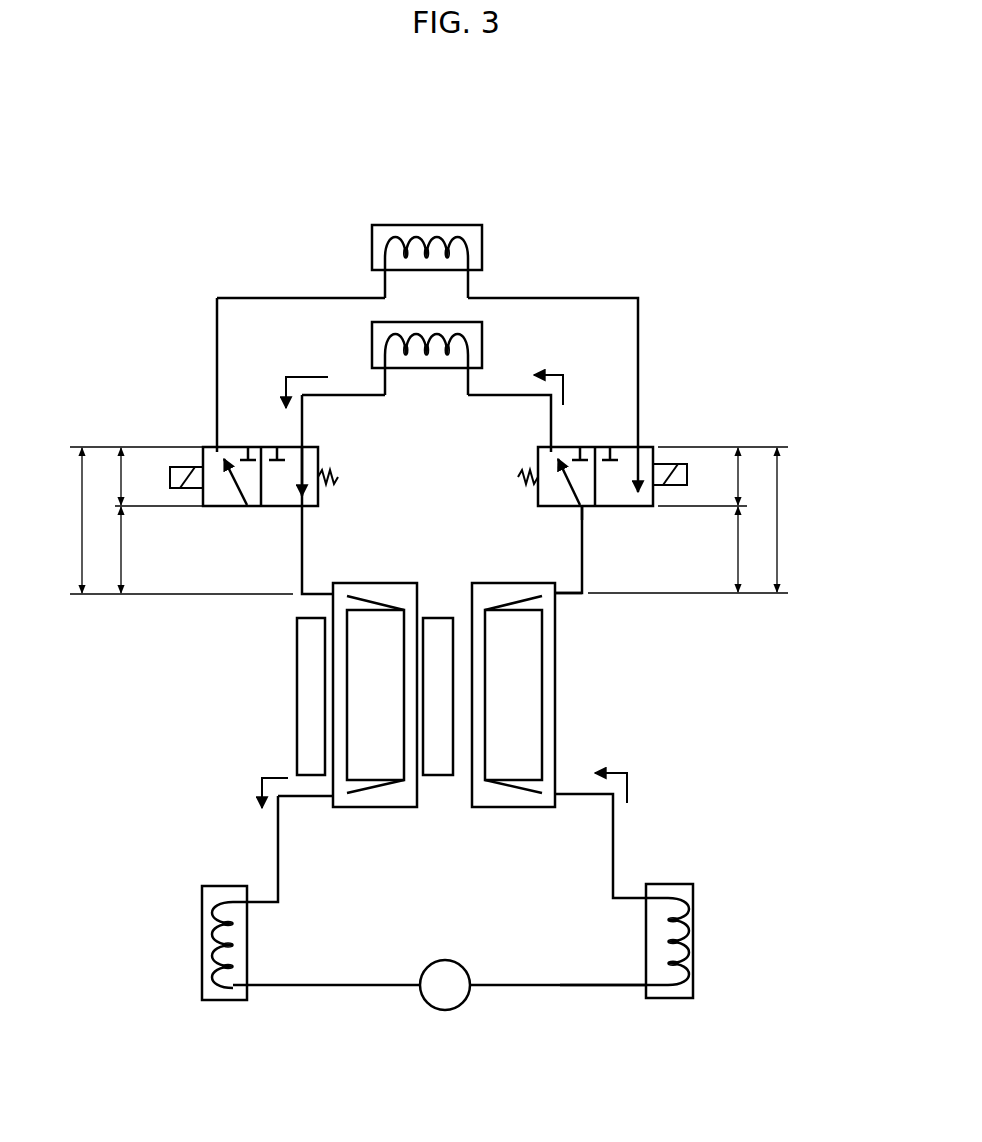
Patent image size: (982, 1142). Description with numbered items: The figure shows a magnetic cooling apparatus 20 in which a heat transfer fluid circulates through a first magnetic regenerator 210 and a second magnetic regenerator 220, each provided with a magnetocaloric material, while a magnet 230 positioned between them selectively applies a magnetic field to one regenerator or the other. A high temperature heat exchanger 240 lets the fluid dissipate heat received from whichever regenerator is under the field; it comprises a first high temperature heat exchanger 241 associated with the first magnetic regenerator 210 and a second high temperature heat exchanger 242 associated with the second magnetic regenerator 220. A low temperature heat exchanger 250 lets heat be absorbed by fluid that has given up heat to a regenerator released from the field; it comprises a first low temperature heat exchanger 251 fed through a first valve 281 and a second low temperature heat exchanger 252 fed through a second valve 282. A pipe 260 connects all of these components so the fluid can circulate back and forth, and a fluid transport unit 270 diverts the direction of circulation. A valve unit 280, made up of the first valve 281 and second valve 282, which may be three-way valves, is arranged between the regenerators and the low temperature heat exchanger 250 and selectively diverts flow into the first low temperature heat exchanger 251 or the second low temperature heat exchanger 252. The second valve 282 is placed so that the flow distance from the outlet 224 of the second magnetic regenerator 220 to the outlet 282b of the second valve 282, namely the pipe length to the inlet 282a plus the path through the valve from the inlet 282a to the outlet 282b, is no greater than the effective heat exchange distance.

The magnetic cooling apparatus 20 is at (434, 133).
The first magnetic regenerator 210 is at (357, 583).
The second magnetic regenerator 220 is at (492, 583).
The outlet of the second magnetic regenerator 224 is at (556, 596).
The magnet 230 is at (297, 758).
The high temperature heat exchanger 240 is at (447, 930).
The first high temperature heat exchanger 241 is at (202, 893).
The second high temperature heat exchanger 242 is at (693, 895).
The low temperature heat exchanger 250 is at (485, 280).
The first low temperature heat exchanger 251 is at (482, 330).
The second low temperature heat exchanger 252 is at (470, 225).
The pipe 260 is at (615, 987).
The fluid transport unit 270 is at (425, 1008).
The valve unit 280 is at (432, 475).
The first valve 281 is at (212, 447).
The second valve 282 is at (645, 447).
The inlet of the second valve 282a is at (582, 508).
The outlet of the second valve 282b is at (553, 447).